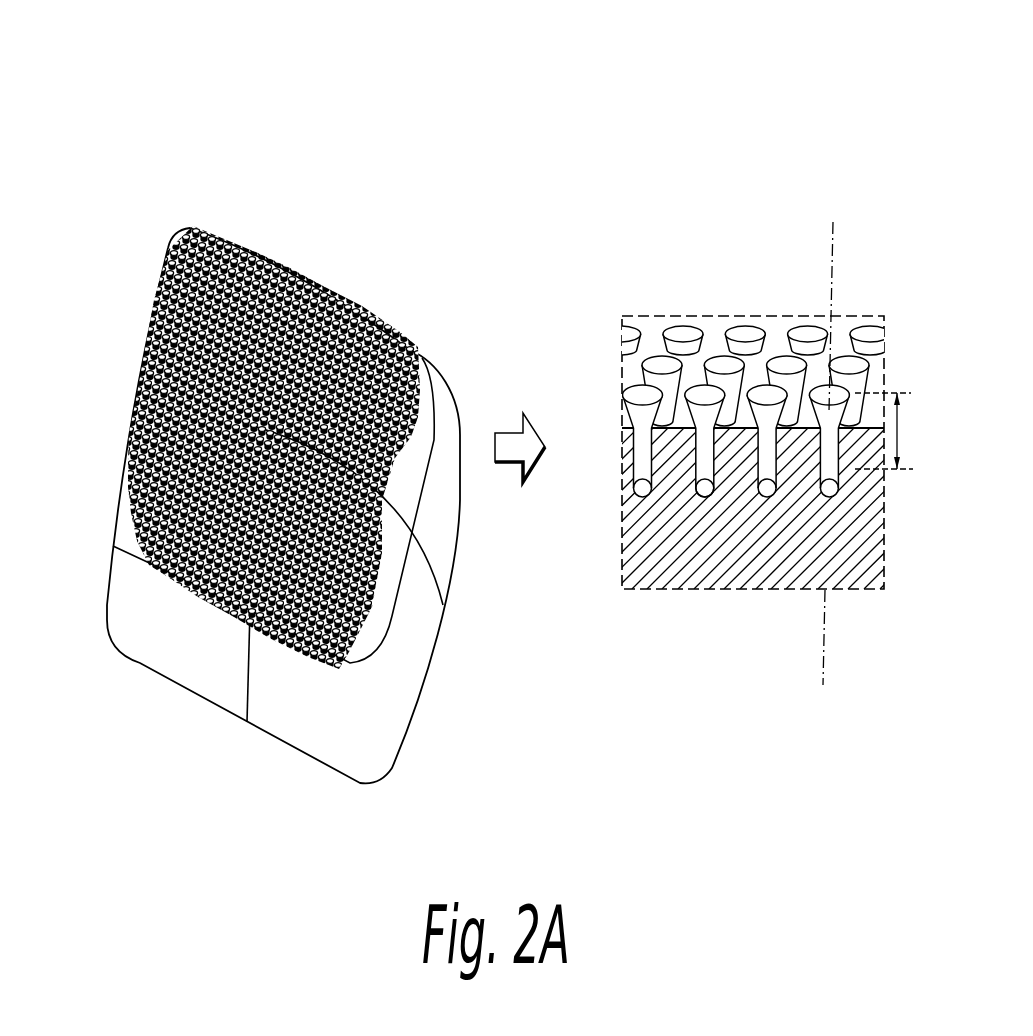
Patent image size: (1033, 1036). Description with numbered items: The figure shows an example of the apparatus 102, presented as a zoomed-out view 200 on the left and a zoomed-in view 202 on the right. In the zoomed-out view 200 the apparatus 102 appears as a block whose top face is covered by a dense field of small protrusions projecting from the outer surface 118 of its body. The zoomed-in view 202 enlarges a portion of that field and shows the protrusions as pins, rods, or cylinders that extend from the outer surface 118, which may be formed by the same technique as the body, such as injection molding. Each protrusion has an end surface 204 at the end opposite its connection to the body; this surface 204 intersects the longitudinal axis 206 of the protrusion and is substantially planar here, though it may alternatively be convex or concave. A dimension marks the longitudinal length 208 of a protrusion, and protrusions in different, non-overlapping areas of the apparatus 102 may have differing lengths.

The zoomed-out view 200 is at (245, 399).
The zoomed-in view 202 is at (747, 350).
The apparatus 102 is at (245, 504).
The outer surface 118 is at (714, 485).
The surface 204 is at (816, 380).
The longitudinal axis 206 is at (833, 252).
The length 208 is at (908, 395).